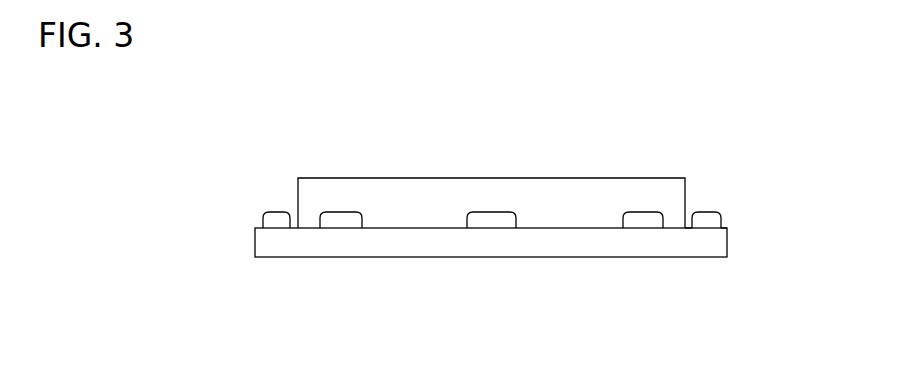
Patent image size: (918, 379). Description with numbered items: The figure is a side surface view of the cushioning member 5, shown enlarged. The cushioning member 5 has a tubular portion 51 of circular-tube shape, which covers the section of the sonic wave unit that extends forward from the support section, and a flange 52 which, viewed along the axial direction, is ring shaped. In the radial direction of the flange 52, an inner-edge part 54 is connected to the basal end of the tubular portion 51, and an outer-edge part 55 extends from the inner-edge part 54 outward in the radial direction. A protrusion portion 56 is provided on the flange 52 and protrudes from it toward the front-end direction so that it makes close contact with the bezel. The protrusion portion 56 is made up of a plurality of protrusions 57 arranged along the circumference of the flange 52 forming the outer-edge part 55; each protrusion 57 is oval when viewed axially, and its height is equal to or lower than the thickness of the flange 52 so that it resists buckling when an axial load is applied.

The cushioning member 5 is at (238, 176).
The tubular portion 51 is at (560, 185).
The flange 52 is at (590, 247).
The inner-edge part 54 is at (691, 227).
The outer-edge part 55 is at (726, 227).
The protrusion portion 56 is at (717, 211).
The protrusions 57 is at (345, 218).